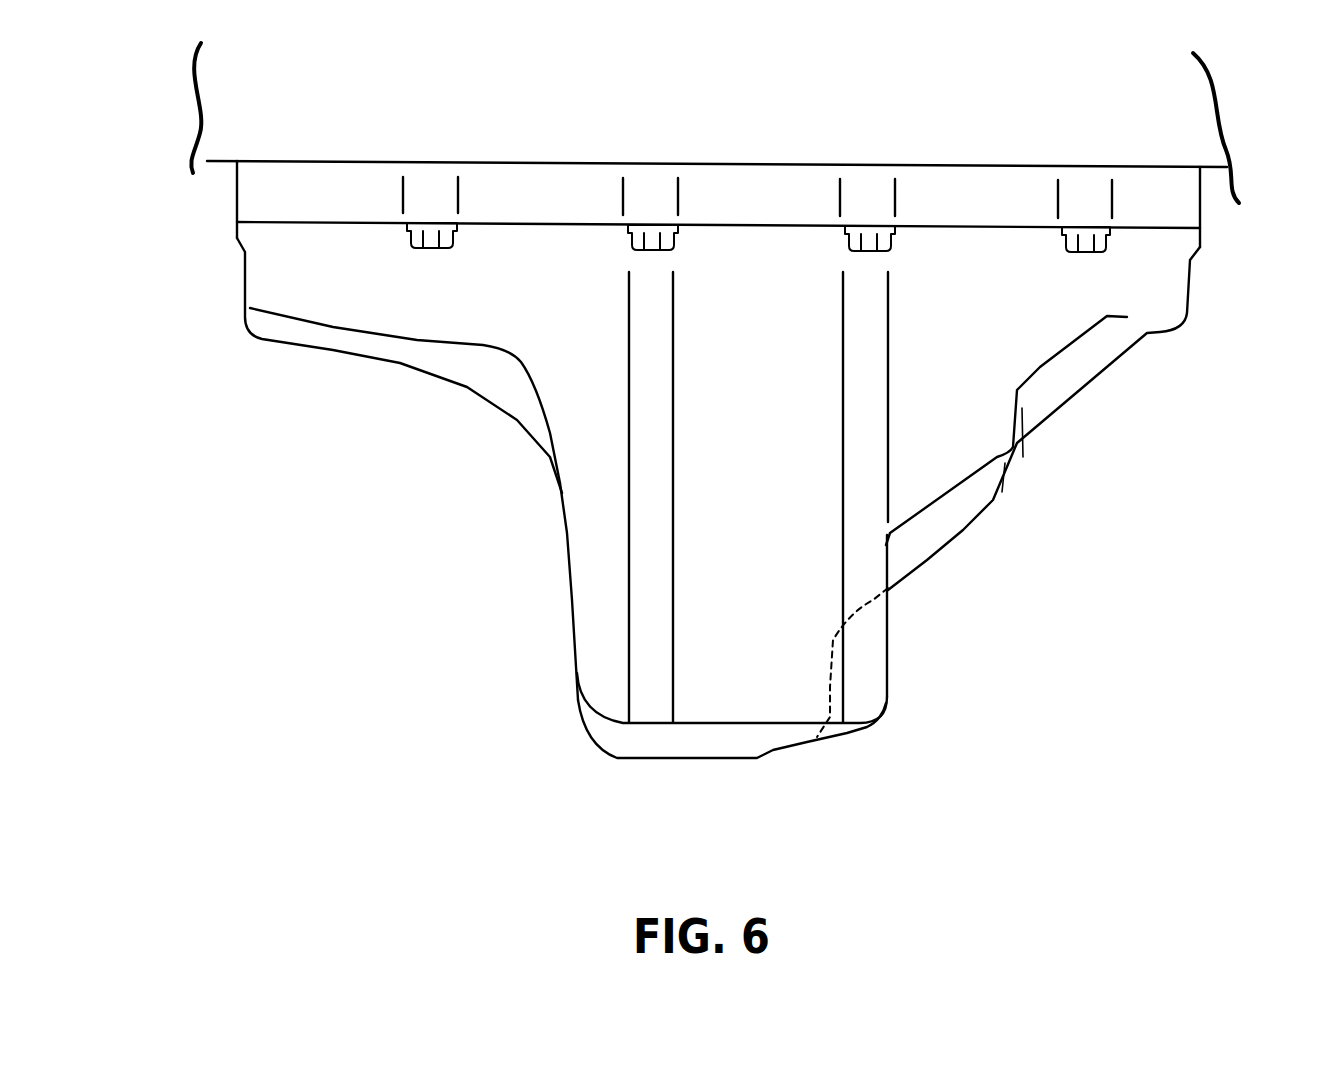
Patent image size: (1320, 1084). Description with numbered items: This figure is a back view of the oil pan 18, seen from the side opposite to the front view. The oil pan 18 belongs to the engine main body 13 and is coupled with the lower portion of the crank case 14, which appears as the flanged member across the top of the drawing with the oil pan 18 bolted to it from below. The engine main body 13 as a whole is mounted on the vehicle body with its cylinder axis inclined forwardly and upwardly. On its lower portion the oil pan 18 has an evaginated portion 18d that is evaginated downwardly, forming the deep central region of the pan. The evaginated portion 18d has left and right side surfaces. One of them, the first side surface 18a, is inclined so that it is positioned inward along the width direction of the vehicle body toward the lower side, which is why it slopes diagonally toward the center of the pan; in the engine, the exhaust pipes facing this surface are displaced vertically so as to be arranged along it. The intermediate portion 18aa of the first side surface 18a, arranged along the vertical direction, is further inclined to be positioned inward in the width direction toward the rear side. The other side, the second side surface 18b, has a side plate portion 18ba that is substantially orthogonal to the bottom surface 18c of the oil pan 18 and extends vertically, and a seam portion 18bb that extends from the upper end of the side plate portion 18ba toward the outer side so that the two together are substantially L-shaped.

The engine main body 13 is at (176, 116).
The crank case 14 is at (1170, 107).
The oil pan 18 is at (781, 397).
The first side surface 18a is at (1085, 408).
The intermediate portion 18aa is at (1047, 387).
The second side surface 18b is at (397, 469).
The side plate portion 18ba is at (572, 600).
The seam portion 18bb is at (420, 360).
The bottom surface 18c is at (717, 760).
The evaginated portion 18d is at (783, 635).